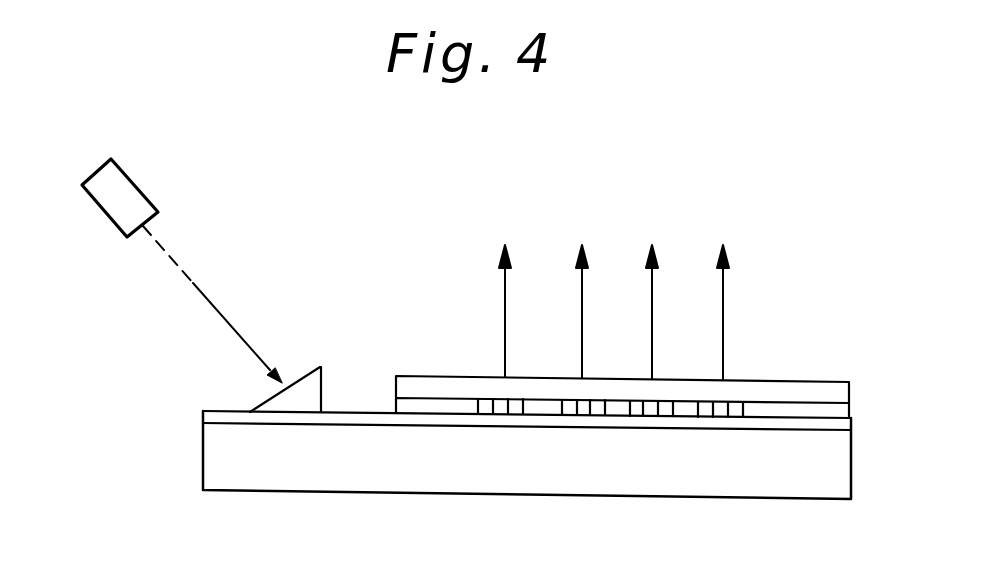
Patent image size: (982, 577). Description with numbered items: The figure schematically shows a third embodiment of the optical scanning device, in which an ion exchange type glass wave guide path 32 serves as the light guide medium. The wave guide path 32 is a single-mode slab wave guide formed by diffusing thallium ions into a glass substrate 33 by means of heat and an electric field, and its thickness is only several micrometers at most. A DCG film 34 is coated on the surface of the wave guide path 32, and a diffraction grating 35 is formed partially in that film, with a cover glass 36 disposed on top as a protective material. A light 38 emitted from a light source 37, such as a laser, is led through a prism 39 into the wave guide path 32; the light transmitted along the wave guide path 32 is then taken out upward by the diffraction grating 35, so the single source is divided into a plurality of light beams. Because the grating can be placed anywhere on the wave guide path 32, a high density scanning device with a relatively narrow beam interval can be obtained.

The glass wave guide path 32 is at (690, 423).
The glass substrate 33 is at (512, 472).
The DCG film 34 is at (825, 408).
The diffraction grating 35 is at (737, 403).
The cover glass 36 is at (792, 395).
The light source 37 is at (127, 170).
The light 38 is at (225, 317).
The prism 39 is at (310, 365).